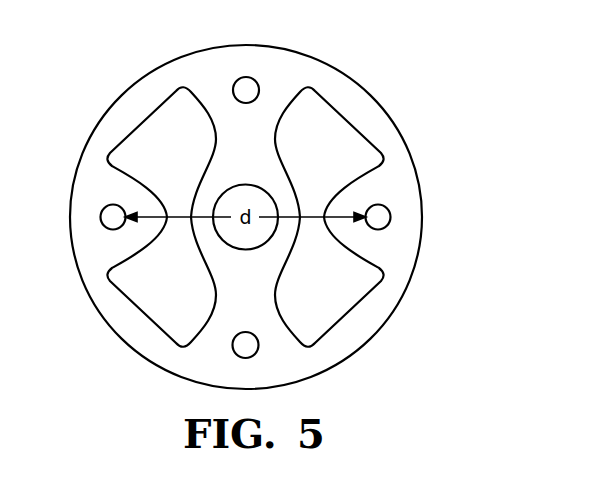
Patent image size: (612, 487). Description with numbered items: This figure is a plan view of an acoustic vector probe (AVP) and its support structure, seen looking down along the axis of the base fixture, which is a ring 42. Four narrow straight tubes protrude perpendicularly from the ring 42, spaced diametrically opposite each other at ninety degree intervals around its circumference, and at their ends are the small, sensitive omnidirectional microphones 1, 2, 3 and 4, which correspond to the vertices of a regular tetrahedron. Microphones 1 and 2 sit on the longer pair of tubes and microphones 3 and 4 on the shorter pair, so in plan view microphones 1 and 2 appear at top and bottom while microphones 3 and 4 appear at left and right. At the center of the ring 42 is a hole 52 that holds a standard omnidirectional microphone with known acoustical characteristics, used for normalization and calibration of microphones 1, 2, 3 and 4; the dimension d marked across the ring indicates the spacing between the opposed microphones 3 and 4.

The ring 42 is at (132, 87).
The central shaft hole 52 is at (258, 202).
The omnidirectional microphone 1 is at (253, 78).
The omnidirectional microphone 2 is at (255, 355).
The omnidirectional microphone 3 is at (104, 208).
The omnidirectional microphone 4 is at (387, 208).